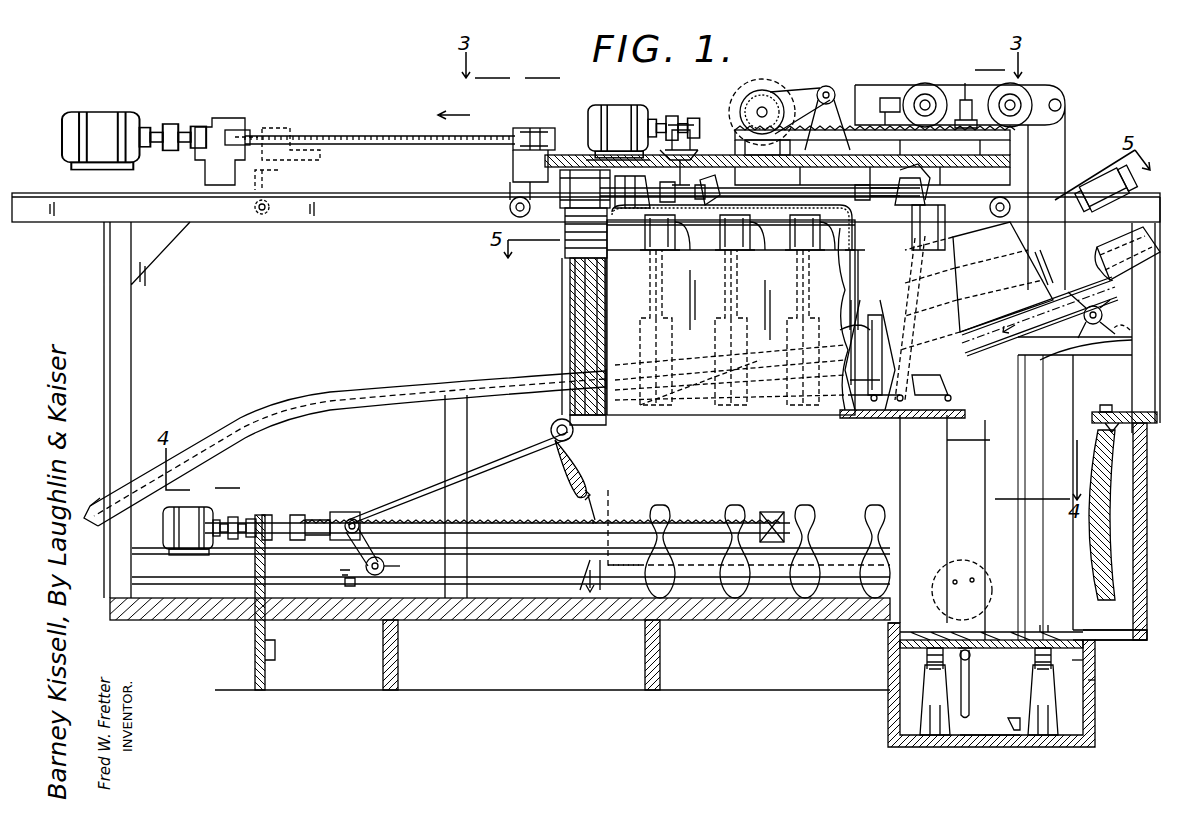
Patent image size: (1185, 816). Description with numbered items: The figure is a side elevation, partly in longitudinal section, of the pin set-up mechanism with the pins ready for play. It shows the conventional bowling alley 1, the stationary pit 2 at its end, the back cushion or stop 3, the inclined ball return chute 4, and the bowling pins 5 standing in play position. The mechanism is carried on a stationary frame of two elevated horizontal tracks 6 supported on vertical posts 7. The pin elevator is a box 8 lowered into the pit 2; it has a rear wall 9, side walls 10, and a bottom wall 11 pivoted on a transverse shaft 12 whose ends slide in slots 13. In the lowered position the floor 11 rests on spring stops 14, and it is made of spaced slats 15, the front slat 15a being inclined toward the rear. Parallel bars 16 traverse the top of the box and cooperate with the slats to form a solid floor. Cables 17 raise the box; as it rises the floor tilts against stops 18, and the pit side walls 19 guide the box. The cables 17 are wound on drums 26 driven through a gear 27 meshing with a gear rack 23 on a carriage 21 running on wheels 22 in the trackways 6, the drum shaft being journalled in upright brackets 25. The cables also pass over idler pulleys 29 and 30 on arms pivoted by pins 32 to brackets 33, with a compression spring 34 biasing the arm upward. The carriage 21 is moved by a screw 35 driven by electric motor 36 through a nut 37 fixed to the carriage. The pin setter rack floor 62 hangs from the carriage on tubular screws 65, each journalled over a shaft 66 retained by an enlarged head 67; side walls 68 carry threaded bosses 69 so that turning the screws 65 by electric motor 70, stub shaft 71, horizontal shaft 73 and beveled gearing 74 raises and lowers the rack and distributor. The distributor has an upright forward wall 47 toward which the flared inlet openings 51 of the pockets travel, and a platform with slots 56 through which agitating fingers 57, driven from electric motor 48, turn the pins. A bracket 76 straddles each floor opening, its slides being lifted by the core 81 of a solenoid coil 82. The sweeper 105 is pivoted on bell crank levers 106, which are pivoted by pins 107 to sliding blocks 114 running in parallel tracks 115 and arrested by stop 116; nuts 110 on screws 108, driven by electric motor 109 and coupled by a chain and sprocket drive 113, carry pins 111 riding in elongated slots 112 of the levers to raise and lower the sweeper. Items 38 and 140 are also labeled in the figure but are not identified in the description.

The bowling alley 1 is at (510, 608).
The stationary pit 2 is at (888, 712).
The back cushion 3 is at (1095, 540).
The return chute 4 is at (315, 398).
The bowling pins 5 is at (735, 500).
The horizontal tracks 6 is at (365, 196).
The vertical posts 7 is at (134, 330).
The box 8 is at (979, 730).
The rear wall 9 is at (1095, 680).
The side walls 10 is at (1075, 662).
The bottom wall 11 is at (985, 650).
The transverse shaft 12 is at (962, 677).
The slots 13 is at (969, 690).
The spring stops 14 is at (985, 405).
The slats 15 is at (1038, 632).
The front slat 15a is at (960, 618).
The parallel bars 16 is at (989, 658).
The cables 17 is at (950, 483).
The stops 18 is at (1015, 730).
The pit side walls 19 is at (1050, 395).
The carriage 21 is at (848, 172).
The wheels 22 is at (505, 208).
The gear rack 23 is at (865, 132).
The upright brackets 25 is at (780, 148).
The drums 26 is at (772, 85).
The gear 27 is at (770, 95).
The idler pulley 29 is at (925, 82).
The idler pulley 30 is at (1026, 88).
The pins 32 is at (1060, 100).
The brackets 33 is at (1060, 138).
The compression spring 34 is at (966, 90).
The screw 35 is at (345, 135).
The electric motor 36 is at (104, 112).
The nut 37 is at (540, 140).
The pit lip 38 is at (898, 636).
The forward wall 47 is at (975, 388).
The electric motor 48 is at (1108, 205).
The flared inlet openings 51 is at (1040, 304).
The slots 56 is at (1090, 303).
The agitating fingers 57 is at (1112, 340).
The floor 62 is at (700, 415).
The screws 65 is at (570, 318).
The shaft 66 is at (570, 200).
The enlarged head 67 is at (595, 420).
The side walls 68 is at (575, 340).
The bosses 69 is at (568, 262).
The electric motor 70 is at (618, 110).
The stub shaft 71 is at (700, 130).
The horizontal shaft 73 is at (775, 192).
The beveled gearing 74 is at (950, 178).
The bracket 76 is at (882, 415).
The core 81 is at (858, 270).
The solenoid coil 82 is at (800, 236).
The sweeper 105 is at (560, 466).
The bell crank levers 106 is at (440, 485).
The pins 107 is at (375, 580).
The screws 108 is at (498, 520).
The electric motor 109 is at (195, 505).
The nuts 110 is at (343, 512).
The pins 111 is at (355, 520).
The elongated slots 112 is at (345, 550).
The chain and sprocket drive 113 is at (252, 598).
The sliding blocks 114 is at (392, 568).
The tracks 115 is at (500, 560).
The stop 116 is at (345, 585).
The top frame 140 is at (885, 110).